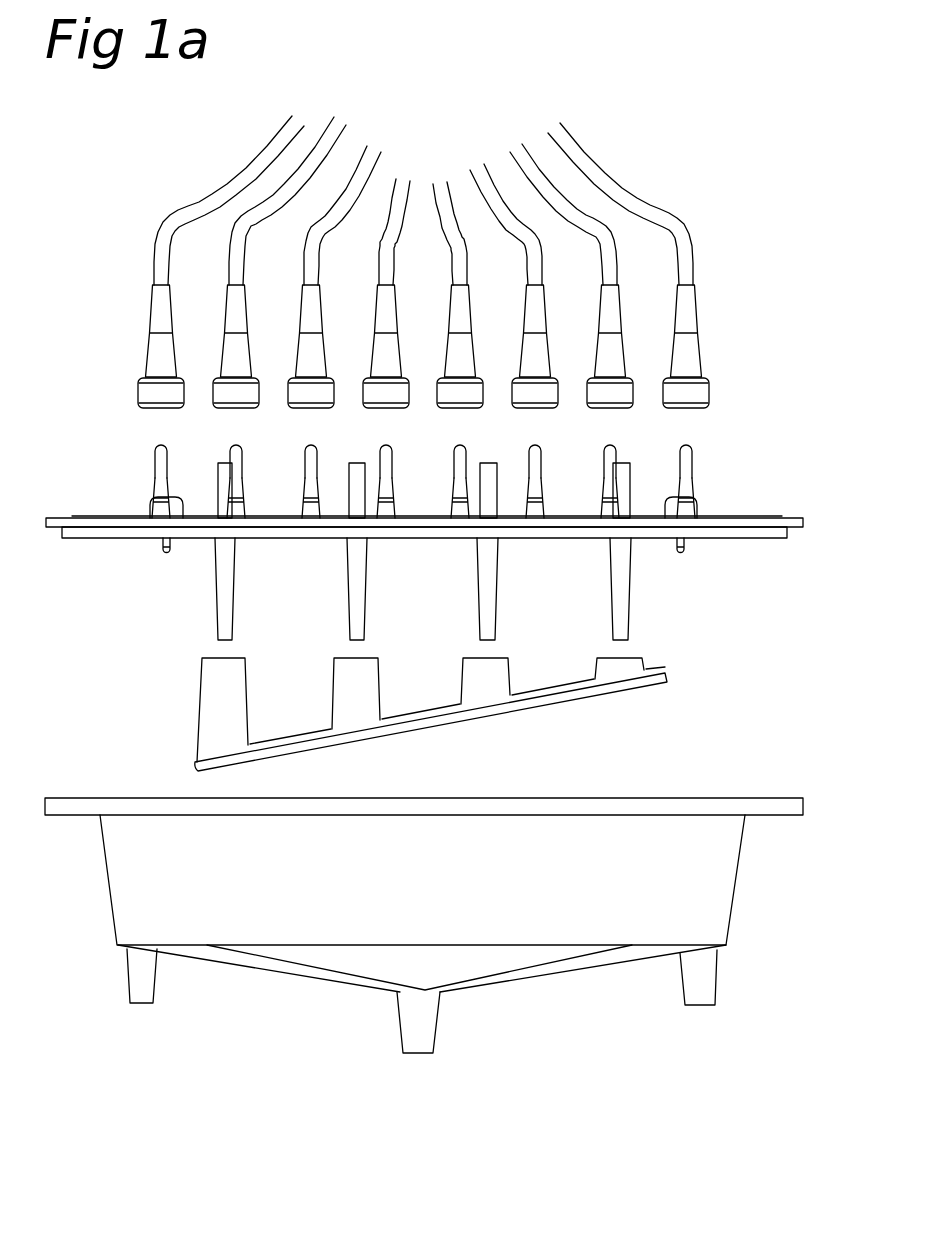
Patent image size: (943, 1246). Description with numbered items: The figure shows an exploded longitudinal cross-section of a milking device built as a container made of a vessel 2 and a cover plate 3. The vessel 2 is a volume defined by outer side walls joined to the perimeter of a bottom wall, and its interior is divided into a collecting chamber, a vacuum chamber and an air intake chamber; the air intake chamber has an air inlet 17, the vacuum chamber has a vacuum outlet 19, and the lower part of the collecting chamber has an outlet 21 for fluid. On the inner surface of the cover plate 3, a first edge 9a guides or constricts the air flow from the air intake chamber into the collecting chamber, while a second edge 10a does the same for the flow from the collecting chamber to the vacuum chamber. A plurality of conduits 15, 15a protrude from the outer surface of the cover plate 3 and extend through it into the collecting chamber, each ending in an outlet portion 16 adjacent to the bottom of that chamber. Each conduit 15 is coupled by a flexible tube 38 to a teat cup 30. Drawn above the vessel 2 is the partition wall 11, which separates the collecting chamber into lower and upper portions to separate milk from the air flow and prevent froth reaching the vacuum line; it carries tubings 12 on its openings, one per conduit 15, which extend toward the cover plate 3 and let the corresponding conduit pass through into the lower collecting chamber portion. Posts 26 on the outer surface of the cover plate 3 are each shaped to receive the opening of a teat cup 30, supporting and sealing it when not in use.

The vessel 2 is at (695, 868).
The cover plate 3 is at (780, 518).
The first edge 9a is at (166, 550).
The second edge 10a is at (683, 548).
The partition wall 11 is at (557, 702).
The tubings 12 is at (347, 685).
The conduits 15 is at (424, 466).
The pin tip 15a is at (223, 487).
The outlet portion 16 is at (353, 578).
The air inlet 17 is at (140, 983).
The vacuum outlet 19 is at (707, 968).
The outlet 21 is at (417, 1020).
The posts 26 is at (237, 452).
The teat cup 30 is at (208, 355).
The flexible tube 38 is at (513, 148).